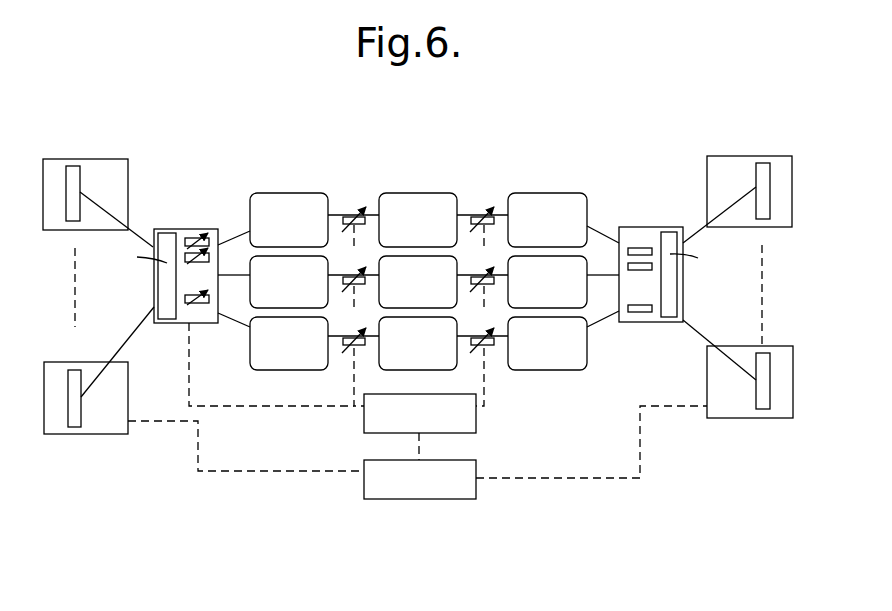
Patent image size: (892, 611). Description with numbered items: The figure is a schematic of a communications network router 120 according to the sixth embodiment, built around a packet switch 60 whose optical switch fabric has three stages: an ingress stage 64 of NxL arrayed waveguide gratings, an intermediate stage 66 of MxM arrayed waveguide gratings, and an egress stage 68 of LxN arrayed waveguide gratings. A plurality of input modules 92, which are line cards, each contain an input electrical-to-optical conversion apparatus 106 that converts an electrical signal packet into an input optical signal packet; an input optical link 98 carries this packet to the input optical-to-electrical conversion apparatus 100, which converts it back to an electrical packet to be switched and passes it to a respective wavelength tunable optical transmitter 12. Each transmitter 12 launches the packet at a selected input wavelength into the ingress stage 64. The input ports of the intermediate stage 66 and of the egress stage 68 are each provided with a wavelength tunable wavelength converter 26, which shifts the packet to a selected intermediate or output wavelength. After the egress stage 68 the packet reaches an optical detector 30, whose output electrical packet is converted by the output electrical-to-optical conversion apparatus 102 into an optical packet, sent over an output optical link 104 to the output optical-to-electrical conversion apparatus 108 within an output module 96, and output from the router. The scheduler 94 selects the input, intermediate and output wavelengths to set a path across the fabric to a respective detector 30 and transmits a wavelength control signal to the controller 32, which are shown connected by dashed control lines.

The wavelength tunable optical transmitter 12 is at (193, 237).
The wavelength tunable wavelength converter 26 is at (343, 347).
The optical detector 30 is at (633, 312).
The controller 32 is at (457, 416).
The packet switch 60 is at (482, 138).
The ingress stage 64 is at (253, 187).
The intermediate stage 66 is at (378, 178).
The egress stage 68 is at (508, 180).
The input module 92 is at (107, 172).
The scheduler 94 is at (444, 487).
The output module 96 is at (720, 167).
The input optical link 98 is at (132, 230).
The input optical-to-electrical signal conversion apparatus 100 is at (158, 293).
The output electrical-to-optical signal conversion apparatus 102 is at (681, 285).
The output optical link 104 is at (698, 228).
The input electrical-to-optical signal conversion apparatus 106 is at (70, 172).
The output optical-to-electrical signal conversion apparatus 108 is at (762, 172).
The communications network router 120 is at (417, 381).